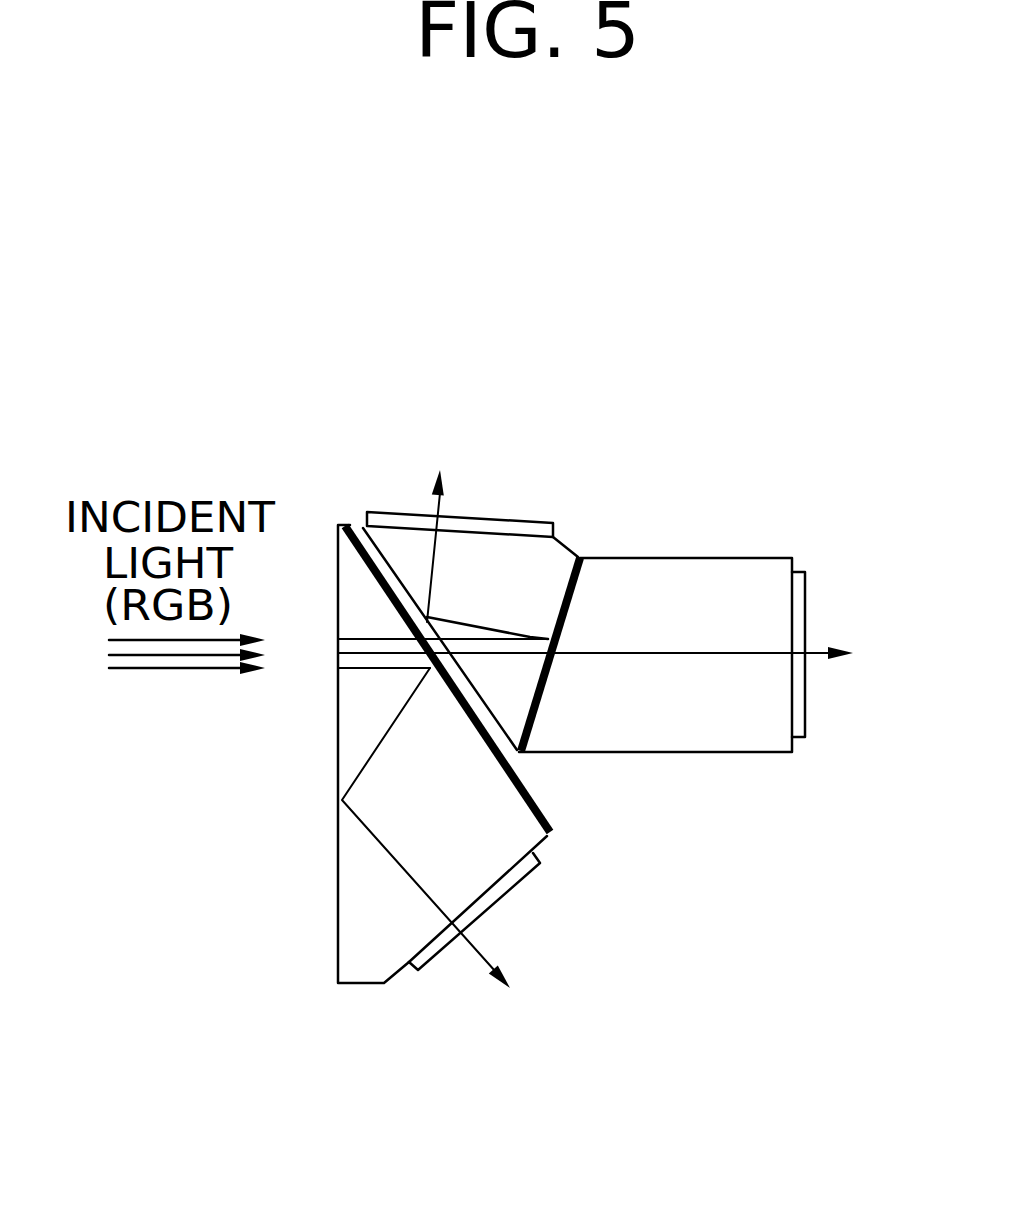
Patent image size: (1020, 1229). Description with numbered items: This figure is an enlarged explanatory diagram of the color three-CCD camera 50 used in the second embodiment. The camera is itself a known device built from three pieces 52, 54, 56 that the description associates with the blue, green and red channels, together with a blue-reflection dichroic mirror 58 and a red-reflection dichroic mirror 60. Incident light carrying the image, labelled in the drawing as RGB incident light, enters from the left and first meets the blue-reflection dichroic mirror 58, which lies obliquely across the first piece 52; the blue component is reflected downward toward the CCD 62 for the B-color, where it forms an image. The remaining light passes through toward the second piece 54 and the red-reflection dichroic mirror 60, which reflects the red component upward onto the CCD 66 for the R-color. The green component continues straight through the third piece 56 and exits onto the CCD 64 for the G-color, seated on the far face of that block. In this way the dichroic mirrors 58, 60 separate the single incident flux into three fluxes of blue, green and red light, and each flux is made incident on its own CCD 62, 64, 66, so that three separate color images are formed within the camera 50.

The color separation prism assembly 50 is at (590, 425).
The CCD 52 is at (358, 908).
The CCD 54 is at (502, 553).
The CCD 56 is at (718, 733).
The blue-reflection dichroic mirror 58 is at (553, 825).
The red-reflection dichroic mirror 60 is at (580, 557).
The CCD for B-color 62 is at (417, 972).
The CCD for G-color 64 is at (805, 738).
The CCD for R-color 66 is at (370, 537).